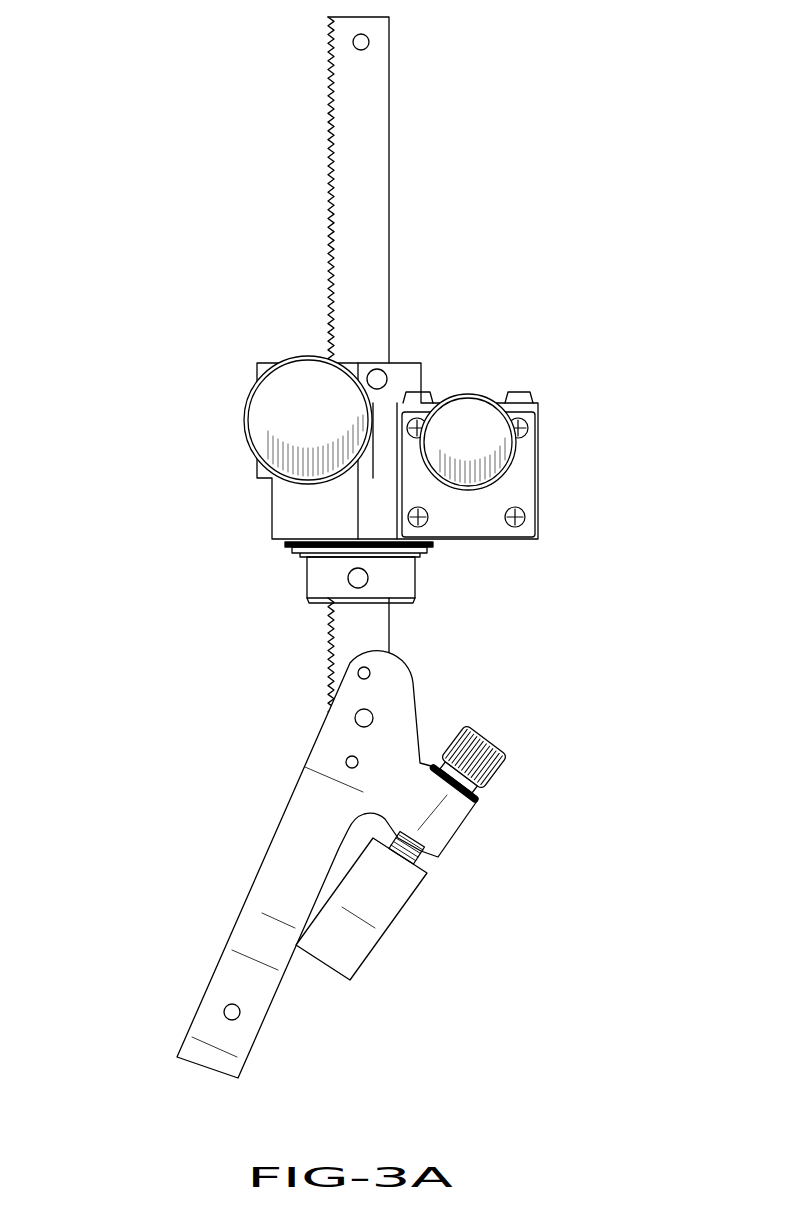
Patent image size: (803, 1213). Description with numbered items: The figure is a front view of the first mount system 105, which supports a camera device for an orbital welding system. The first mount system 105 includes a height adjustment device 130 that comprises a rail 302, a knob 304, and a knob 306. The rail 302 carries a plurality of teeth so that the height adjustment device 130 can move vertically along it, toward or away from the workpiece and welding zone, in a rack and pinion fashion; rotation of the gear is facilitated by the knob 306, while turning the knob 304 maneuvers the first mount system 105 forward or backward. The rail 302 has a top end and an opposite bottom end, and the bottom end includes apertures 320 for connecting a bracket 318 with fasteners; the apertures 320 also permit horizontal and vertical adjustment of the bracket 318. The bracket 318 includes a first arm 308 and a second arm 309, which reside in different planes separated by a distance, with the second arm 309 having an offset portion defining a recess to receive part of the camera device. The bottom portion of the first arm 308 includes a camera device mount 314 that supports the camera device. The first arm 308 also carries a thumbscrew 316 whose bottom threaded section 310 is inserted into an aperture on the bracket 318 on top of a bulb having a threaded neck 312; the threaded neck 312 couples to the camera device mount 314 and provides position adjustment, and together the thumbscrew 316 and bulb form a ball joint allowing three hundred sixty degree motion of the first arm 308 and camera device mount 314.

The first mount system 105 is at (114, 250).
The rail 302 is at (378, 114).
The knob 304 is at (472, 428).
The knob 306 is at (288, 405).
The height adjustment device 130 is at (467, 522).
The apertures 320 is at (357, 757).
The bracket 318 is at (322, 740).
The thumbscrew 316 is at (465, 728).
The first arm 308 is at (512, 754).
The threaded section 310 is at (477, 798).
The threaded neck 312 is at (410, 857).
The camera device mount 314 is at (378, 940).
The second arm 309 is at (203, 1066).